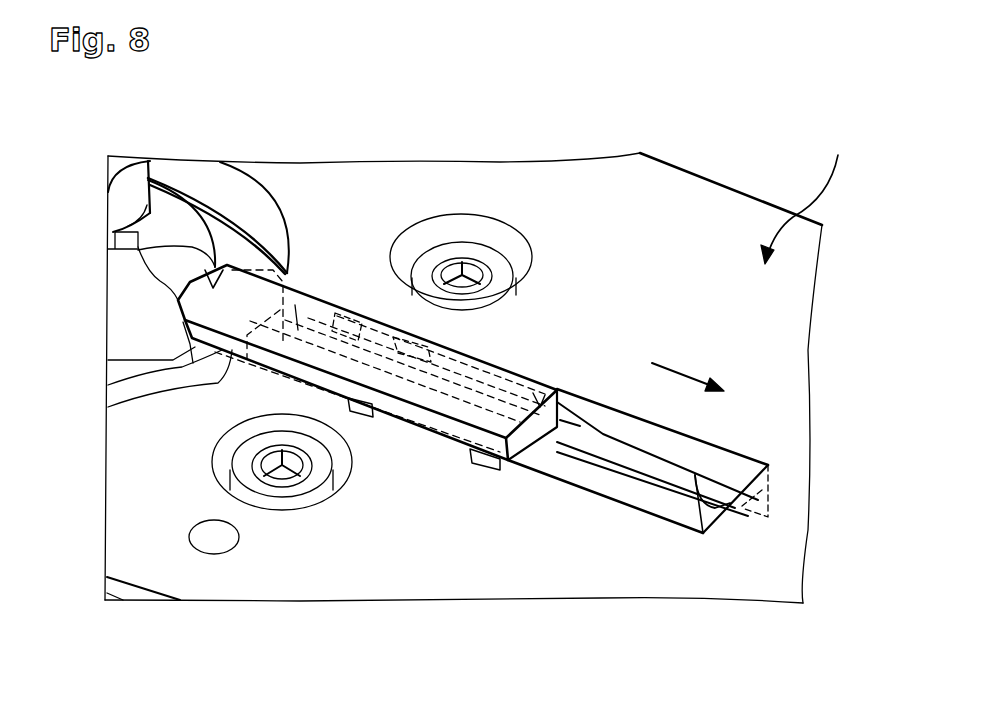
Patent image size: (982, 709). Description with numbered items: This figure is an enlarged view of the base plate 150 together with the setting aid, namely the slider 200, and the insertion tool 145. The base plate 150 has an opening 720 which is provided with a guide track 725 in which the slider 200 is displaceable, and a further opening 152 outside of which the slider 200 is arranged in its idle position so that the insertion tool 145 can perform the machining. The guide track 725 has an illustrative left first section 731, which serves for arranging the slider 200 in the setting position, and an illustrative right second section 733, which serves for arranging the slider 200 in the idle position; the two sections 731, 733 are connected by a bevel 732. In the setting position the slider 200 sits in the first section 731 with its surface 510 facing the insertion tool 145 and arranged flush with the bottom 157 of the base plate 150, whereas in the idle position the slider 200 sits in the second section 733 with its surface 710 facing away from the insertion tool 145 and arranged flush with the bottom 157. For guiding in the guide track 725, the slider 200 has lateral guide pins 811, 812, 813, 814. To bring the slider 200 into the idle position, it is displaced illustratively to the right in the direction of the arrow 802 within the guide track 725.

The base plate 150 is at (733, 217).
The opening of the base plate 152 is at (243, 190).
The bottom of the base plate 157 is at (820, 207).
The slider 200 is at (250, 307).
The surface of the slider 710 is at (113, 252).
The insertion tool 145 is at (173, 265).
The surface of the slider 510 is at (108, 407).
The arrow 802 is at (690, 373).
The second section 733 is at (705, 523).
The lateral guide pin 811 is at (383, 415).
The lateral guide pin 812 is at (478, 460).
The lateral guide pin 813 is at (420, 335).
The lateral guide pin 814 is at (543, 383).
The opening 720 is at (608, 497).
The guide track 725 is at (693, 473).
The first section 731 is at (370, 318).
The bevel 732 is at (577, 423).